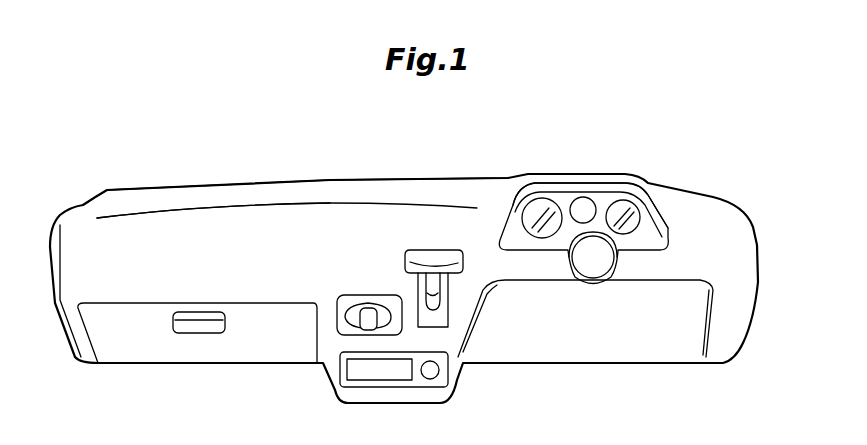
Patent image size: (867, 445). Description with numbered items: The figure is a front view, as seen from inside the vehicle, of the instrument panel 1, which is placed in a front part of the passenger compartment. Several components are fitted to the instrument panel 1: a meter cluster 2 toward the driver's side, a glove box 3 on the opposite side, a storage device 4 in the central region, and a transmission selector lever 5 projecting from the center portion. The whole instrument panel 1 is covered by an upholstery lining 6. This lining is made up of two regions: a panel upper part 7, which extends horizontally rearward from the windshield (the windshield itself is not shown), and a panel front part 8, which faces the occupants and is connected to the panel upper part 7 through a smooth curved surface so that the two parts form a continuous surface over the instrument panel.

The instrument panel 1 is at (707, 156).
The meter cluster 2 is at (543, 208).
The glove box 3 is at (217, 350).
The storage device 4 is at (337, 327).
The selector lever 5 is at (428, 255).
The upholstery lining 6 is at (230, 203).
The panel upper part 7 is at (117, 203).
The panel front part 8 is at (130, 267).